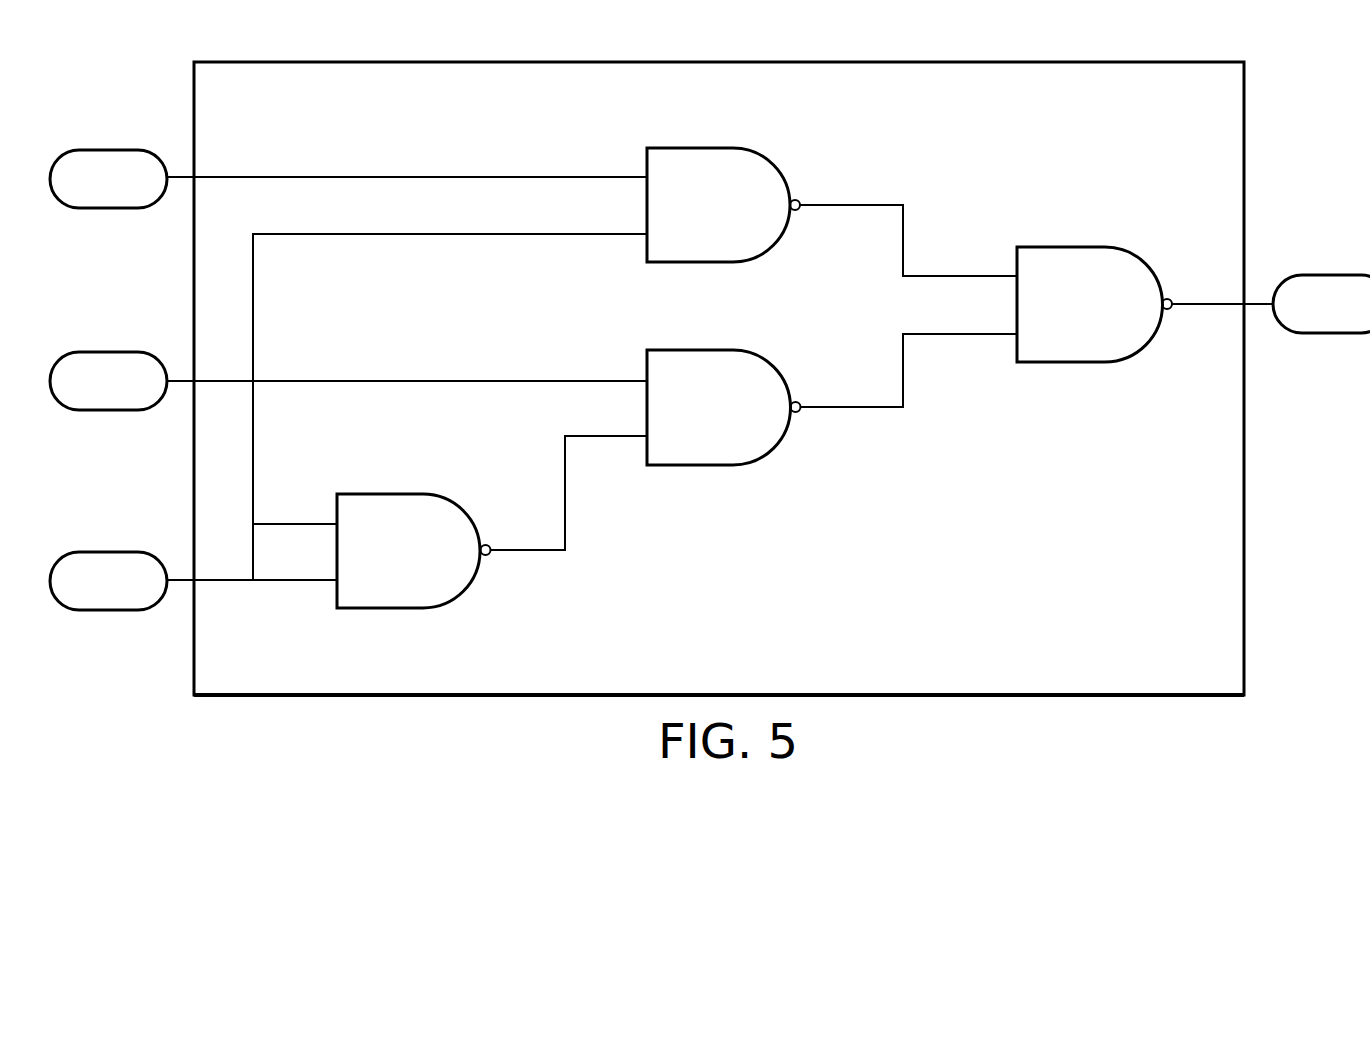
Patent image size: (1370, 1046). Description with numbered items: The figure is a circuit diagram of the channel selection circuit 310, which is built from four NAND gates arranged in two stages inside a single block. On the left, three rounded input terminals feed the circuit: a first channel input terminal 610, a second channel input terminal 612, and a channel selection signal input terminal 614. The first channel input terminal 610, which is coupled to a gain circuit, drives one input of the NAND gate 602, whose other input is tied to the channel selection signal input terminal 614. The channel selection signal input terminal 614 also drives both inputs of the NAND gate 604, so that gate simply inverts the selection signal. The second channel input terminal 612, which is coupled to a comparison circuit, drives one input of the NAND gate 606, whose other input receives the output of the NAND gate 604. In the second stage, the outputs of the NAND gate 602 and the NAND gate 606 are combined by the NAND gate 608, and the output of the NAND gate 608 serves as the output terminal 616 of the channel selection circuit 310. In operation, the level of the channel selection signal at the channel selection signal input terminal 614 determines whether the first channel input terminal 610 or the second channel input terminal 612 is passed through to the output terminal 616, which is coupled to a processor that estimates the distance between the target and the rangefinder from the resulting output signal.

The channel selection circuit 310 is at (1130, 62).
The NAND gate 602 is at (688, 147).
The NAND gate 604 is at (380, 610).
The NAND gate 606 is at (690, 467).
The NAND gate 608 is at (1059, 246).
The first channel input terminal 610 is at (348, 179).
The second channel input terminal 612 is at (348, 381).
The channel selection signal input terminal 614 is at (348, 422).
The output terminal 616 is at (1271, 304).